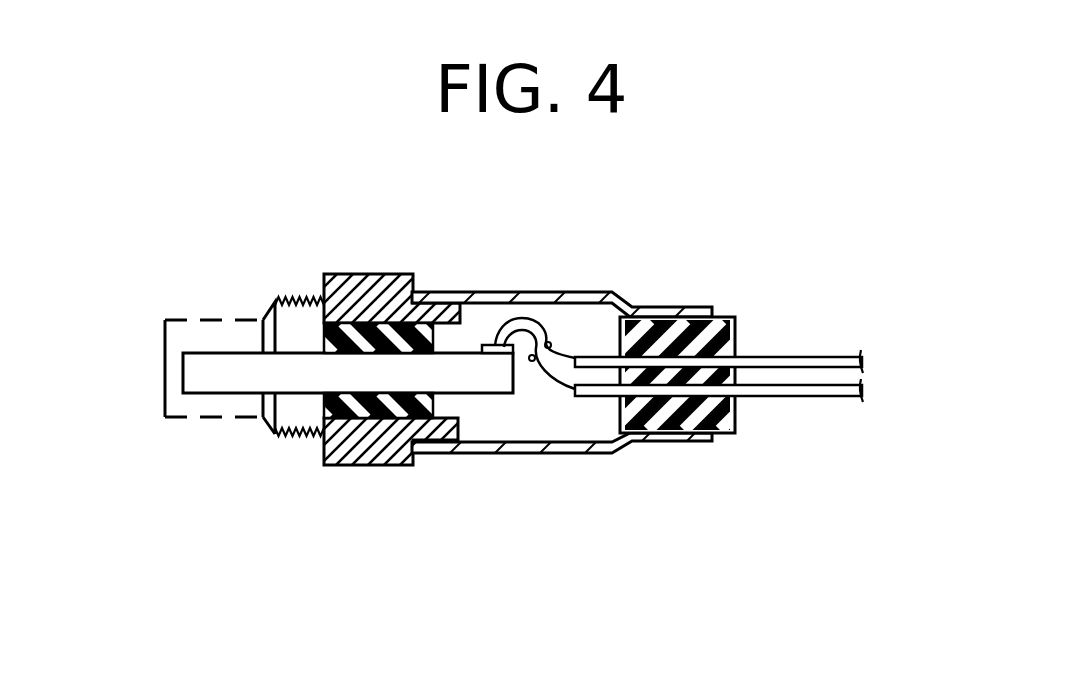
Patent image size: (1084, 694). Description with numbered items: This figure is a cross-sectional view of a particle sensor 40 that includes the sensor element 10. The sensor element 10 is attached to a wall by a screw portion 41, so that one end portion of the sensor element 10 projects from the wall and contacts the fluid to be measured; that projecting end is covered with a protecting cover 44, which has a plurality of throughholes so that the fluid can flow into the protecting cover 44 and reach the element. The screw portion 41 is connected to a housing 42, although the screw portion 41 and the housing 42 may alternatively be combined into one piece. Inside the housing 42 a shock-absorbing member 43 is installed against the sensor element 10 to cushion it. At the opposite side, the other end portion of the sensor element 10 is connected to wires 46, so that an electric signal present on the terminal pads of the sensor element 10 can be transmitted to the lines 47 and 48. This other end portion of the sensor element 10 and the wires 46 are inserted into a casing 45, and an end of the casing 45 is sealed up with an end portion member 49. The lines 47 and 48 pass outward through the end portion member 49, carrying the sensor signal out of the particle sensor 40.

The particle sensor 40 is at (152, 359).
The protecting cover 44 is at (178, 418).
The sensor element 10 is at (237, 375).
The screw portion 41 is at (300, 436).
The shock-absorbing member 43 is at (376, 420).
The housing 42 is at (412, 454).
The casing 45 is at (691, 442).
The end portion member 49 is at (718, 342).
The wires 46 is at (497, 340).
The line 47 is at (815, 356).
The line 48 is at (815, 397).